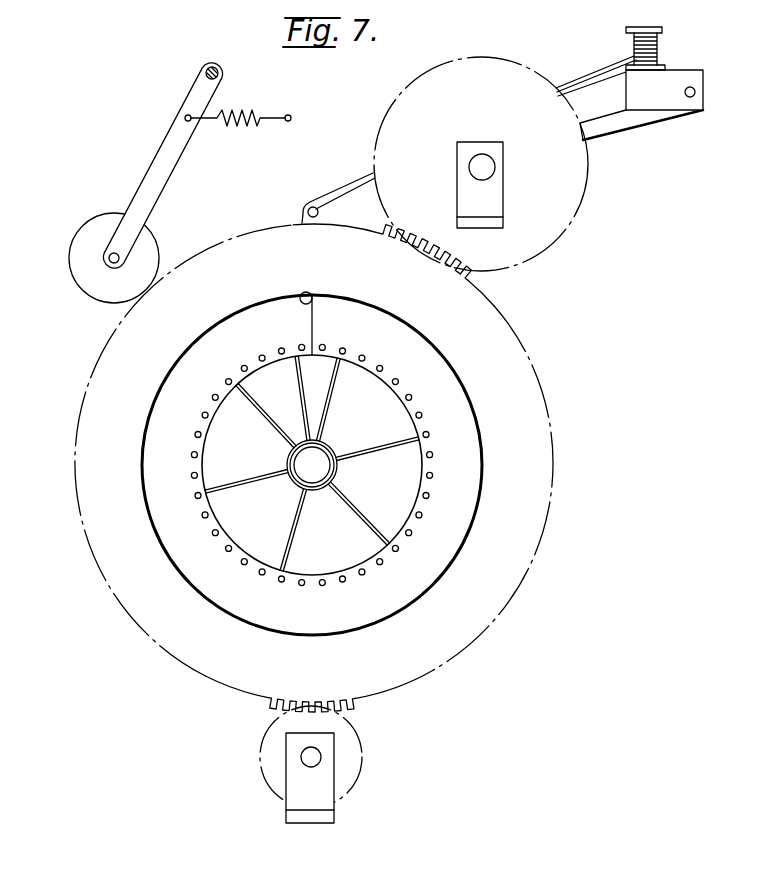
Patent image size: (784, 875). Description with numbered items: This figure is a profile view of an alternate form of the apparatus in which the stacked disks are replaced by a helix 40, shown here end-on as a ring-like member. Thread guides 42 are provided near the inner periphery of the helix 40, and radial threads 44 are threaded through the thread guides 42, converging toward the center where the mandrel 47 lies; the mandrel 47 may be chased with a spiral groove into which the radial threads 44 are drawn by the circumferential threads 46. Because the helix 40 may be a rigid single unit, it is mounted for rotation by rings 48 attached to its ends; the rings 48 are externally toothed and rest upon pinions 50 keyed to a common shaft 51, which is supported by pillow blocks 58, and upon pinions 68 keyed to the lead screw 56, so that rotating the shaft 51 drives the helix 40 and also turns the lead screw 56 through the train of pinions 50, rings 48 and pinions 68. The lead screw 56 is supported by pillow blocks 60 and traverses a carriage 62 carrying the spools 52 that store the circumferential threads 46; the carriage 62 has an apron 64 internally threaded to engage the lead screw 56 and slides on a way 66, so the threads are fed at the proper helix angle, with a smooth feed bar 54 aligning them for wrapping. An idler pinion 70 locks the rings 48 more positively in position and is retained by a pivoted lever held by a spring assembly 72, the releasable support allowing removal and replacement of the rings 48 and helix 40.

The helix 40 is at (158, 458).
The thread guides 42 is at (192, 454).
The radial threads 44 is at (247, 479).
The circumferential threads 46 is at (293, 386).
The mandrel 47 is at (322, 467).
The rings 48 is at (98, 545).
The pinions 50 is at (353, 738).
The shaft 51 is at (306, 755).
The spools 52 is at (662, 30).
The feed bar 54 is at (320, 211).
The lead screw 56 is at (482, 154).
The bearing block 58 is at (298, 788).
The pillow blocks 60 is at (496, 196).
The carriage 62 is at (700, 72).
The apron 64 is at (618, 122).
The way 66 is at (695, 93).
The pinions 68 is at (570, 213).
The idler pinions 70 is at (82, 260).
The spring assembly 72 is at (210, 127).